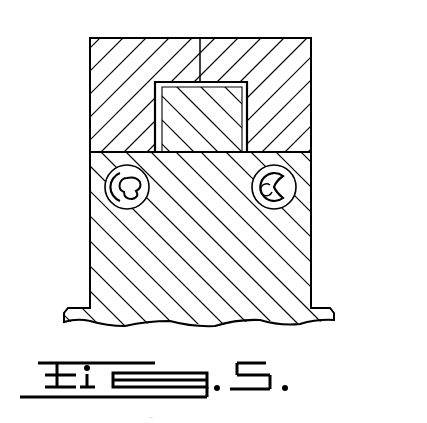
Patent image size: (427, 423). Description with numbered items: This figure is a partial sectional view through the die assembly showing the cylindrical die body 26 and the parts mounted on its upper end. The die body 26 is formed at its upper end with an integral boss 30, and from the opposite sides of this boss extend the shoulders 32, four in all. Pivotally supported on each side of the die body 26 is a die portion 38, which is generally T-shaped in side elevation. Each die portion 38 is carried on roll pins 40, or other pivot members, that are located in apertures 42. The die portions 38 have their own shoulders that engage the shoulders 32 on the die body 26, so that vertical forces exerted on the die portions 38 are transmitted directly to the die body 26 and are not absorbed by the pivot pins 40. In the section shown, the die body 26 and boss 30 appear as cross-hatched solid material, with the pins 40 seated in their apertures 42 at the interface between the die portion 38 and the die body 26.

The die body 26 is at (112, 268).
The integral boss 30 is at (210, 133).
The shoulders 32 is at (278, 153).
The die portion 38 is at (100, 70).
The roll pins 40 is at (115, 182).
The apertures 42 is at (127, 192).